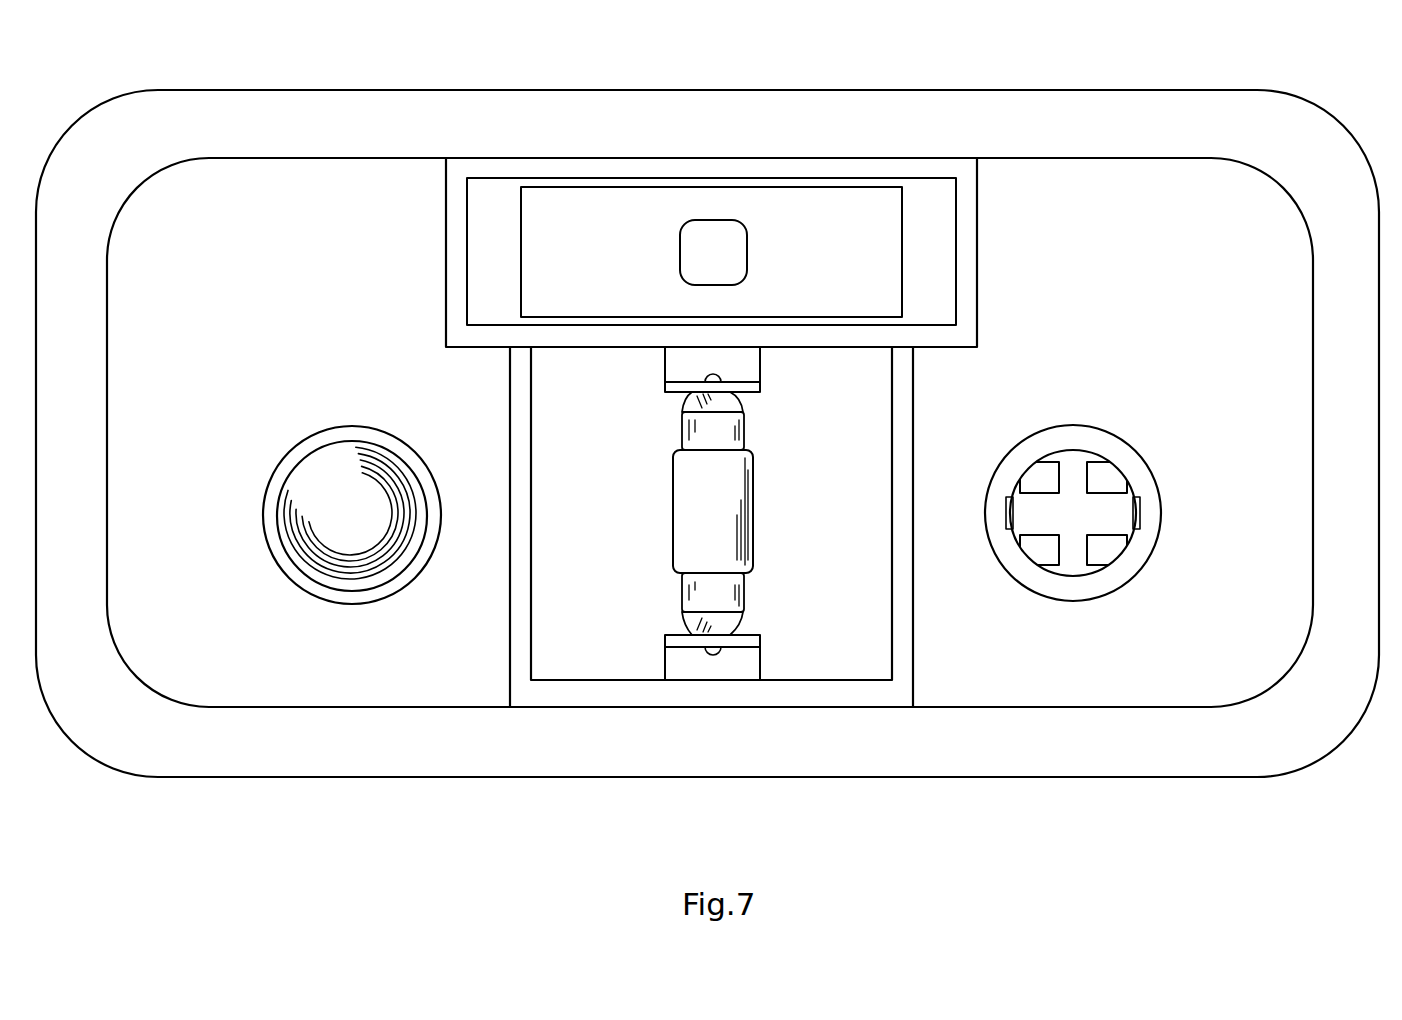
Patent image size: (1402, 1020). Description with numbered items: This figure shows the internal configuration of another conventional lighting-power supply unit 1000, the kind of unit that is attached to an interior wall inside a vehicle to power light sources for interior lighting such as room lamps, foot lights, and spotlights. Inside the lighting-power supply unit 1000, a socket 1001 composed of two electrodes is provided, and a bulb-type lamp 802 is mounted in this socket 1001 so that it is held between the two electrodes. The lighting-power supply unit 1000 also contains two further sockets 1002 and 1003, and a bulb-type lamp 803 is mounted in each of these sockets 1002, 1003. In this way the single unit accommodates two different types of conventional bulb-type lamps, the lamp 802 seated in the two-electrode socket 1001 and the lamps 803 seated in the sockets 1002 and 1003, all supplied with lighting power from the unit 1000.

The lighting-power supply unit 1000 is at (983, 98).
The socket 1001 is at (760, 390).
The bulb-type lamp 802 is at (685, 508).
The bulb-type lamp 803 is at (290, 498).
The socket 1002 is at (280, 557).
The socket 1003 is at (1127, 565).